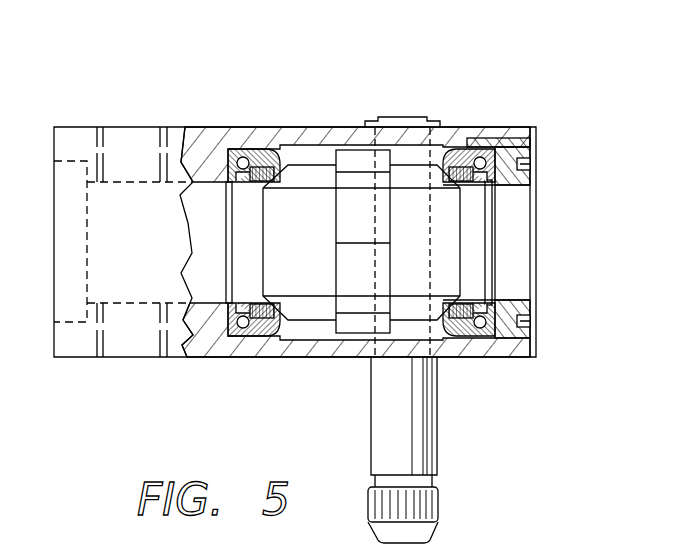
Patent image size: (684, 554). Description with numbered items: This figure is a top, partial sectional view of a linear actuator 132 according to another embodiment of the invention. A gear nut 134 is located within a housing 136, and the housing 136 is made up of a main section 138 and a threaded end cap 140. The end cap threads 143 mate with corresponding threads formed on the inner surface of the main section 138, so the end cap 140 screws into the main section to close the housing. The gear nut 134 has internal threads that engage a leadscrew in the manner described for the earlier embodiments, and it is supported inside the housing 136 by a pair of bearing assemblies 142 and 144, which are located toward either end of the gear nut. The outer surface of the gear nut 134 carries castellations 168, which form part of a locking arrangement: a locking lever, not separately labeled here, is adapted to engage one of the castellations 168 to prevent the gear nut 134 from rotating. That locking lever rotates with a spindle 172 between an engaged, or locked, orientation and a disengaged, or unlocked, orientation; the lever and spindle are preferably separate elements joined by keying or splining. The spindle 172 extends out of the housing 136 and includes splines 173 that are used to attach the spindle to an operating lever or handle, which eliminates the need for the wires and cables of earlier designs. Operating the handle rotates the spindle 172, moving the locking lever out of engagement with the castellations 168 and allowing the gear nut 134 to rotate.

The linear actuator 132 is at (592, 148).
The gear nut 134 is at (312, 170).
The housing 136 is at (122, 128).
The main section 138 is at (66, 345).
The threaded end cap 140 is at (513, 137).
The bearing assembly 142 is at (247, 340).
The end cap threads 143 is at (537, 343).
The bearing assembly 144 is at (481, 342).
The castellations 168 is at (345, 150).
The spindle 172 is at (425, 443).
The splines 173 is at (428, 505).